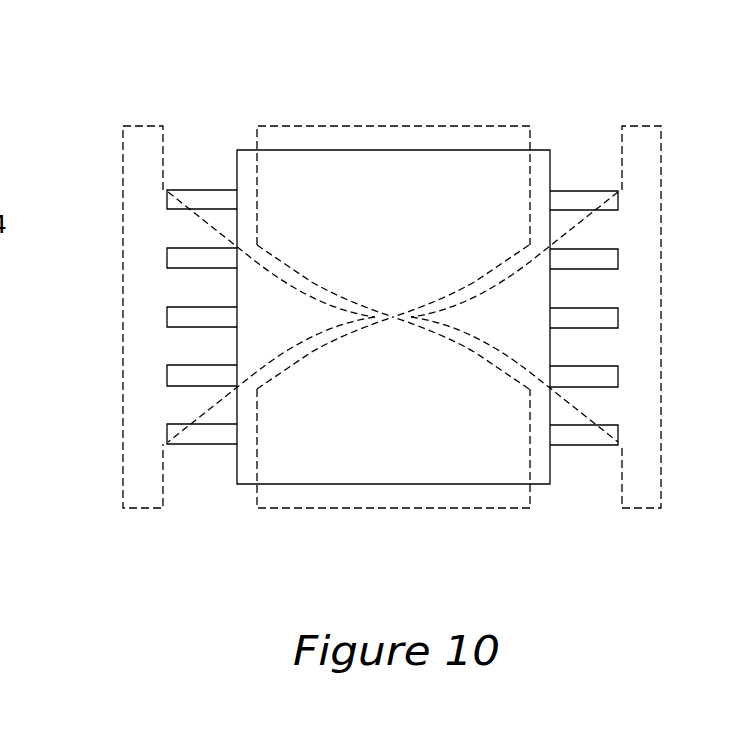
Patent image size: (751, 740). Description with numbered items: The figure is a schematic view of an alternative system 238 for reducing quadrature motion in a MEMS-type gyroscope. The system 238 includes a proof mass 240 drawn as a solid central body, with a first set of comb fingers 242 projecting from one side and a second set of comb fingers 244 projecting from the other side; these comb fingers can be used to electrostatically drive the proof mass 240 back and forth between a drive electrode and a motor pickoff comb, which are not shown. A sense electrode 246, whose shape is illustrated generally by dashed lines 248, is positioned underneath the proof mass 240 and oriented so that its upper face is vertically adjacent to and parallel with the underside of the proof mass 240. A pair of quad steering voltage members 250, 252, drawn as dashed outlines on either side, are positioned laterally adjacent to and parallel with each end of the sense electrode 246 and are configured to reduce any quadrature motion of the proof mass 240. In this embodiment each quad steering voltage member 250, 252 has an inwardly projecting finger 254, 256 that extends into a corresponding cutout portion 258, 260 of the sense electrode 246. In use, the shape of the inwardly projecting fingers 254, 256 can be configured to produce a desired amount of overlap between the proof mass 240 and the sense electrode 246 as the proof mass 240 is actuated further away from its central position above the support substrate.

The system 238 is at (410, 78).
The proof mass 240 is at (542, 162).
The first set of comb fingers 242 is at (167, 258).
The second set of comb fingers 244 is at (619, 261).
The sense electrode 246 is at (413, 171).
The dashed lines 248 is at (333, 126).
The quad steering voltage member 250 is at (138, 482).
The quad steering voltage member 252 is at (643, 479).
The inwardly projecting finger 254 is at (278, 340).
The inwardly projecting finger 256 is at (508, 342).
The cutout portion 258 is at (295, 309).
The cutout portion 260 is at (502, 308).